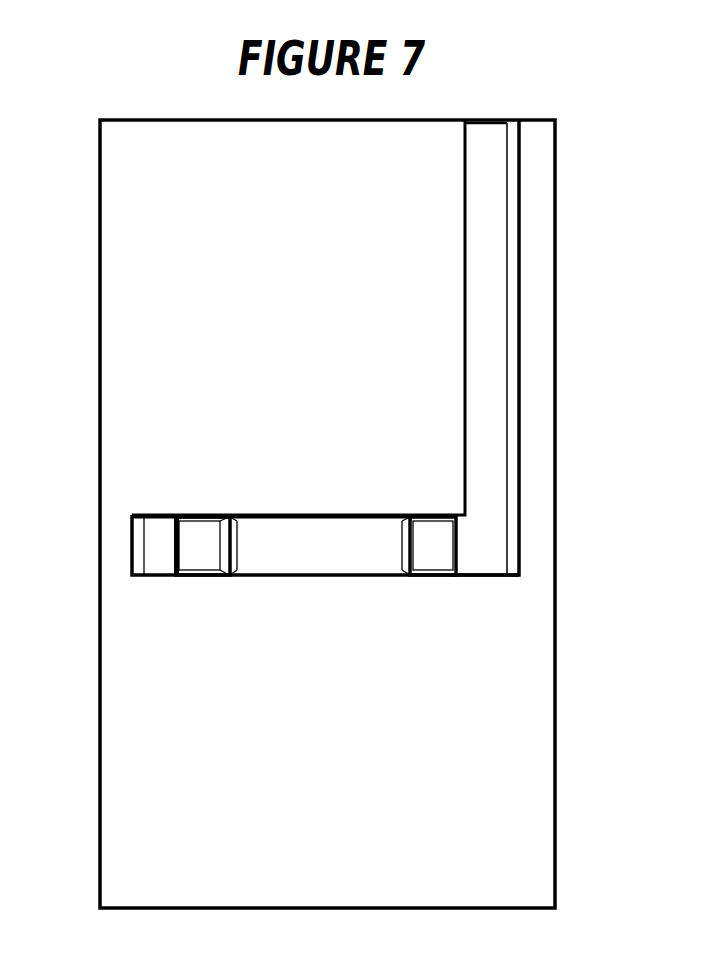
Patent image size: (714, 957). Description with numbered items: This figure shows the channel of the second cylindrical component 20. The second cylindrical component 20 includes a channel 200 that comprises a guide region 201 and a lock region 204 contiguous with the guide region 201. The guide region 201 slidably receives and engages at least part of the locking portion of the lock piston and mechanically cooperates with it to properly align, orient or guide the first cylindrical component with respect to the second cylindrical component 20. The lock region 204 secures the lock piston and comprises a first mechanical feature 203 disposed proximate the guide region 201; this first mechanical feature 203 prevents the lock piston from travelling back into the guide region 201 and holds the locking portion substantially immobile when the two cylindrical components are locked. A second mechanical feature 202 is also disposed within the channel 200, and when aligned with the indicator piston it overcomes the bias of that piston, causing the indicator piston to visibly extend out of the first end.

The second cylindrical component 20 is at (100, 308).
The channel 200 is at (274, 289).
The guide region 201 is at (490, 302).
The second mechanical feature 202 is at (438, 557).
The first mechanical feature 203 is at (202, 556).
The lock region 204 is at (165, 533).